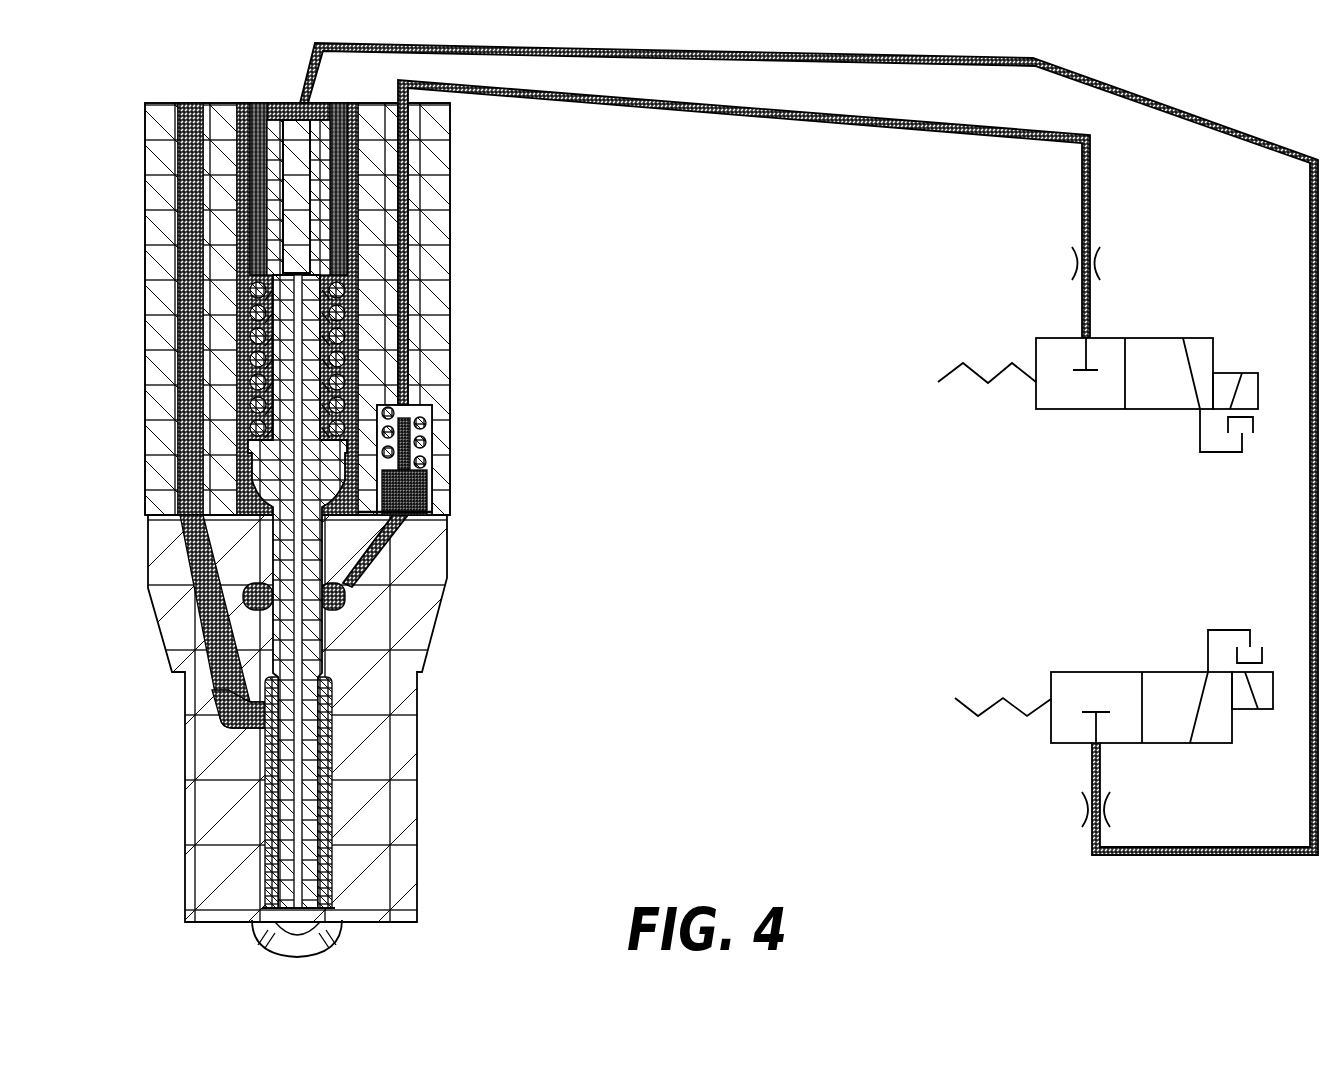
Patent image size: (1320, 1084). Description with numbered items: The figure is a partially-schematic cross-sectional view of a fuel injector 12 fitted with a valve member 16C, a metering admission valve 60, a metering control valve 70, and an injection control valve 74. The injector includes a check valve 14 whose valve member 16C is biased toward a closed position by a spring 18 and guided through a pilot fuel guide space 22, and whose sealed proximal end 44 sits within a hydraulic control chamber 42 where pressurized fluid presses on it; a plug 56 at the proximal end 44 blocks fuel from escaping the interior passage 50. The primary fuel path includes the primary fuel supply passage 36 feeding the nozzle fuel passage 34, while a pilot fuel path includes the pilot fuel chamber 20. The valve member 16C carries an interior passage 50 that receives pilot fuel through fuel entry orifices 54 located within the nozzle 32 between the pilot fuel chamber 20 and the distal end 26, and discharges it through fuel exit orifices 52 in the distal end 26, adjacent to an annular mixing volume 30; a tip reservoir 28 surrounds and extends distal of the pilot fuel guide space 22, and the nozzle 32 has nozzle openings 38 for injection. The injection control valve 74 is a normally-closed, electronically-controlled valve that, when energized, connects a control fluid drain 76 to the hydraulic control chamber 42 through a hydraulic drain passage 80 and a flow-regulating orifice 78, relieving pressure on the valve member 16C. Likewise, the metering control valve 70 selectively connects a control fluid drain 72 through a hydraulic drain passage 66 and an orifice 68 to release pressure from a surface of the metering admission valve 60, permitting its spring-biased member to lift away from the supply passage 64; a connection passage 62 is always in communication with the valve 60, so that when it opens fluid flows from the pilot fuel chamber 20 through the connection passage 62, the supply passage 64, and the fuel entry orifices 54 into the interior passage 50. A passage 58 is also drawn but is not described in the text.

The fuel injector 12 is at (392, 153).
The check valve 14 is at (223, 402).
The valve member 16C is at (333, 220).
The spring 18 is at (352, 310).
The pilot fuel chamber 20 is at (360, 368).
The pilot fuel guide space 22 is at (317, 632).
The distal end 26 is at (317, 917).
The tip reservoir 28 is at (273, 773).
The mixing volume 30 is at (263, 897).
The nozzle 32 is at (193, 815).
The nozzle fuel passage 34 is at (187, 528).
The primary fuel supply passage 36 is at (187, 212).
The nozzle openings 38 is at (330, 932).
The hydraulic control chamber 42 is at (277, 108).
The proximal end 44 is at (288, 117).
The interior passage 50 is at (298, 759).
The fuel exit orifices 52 is at (262, 920).
The fuel entry orifices 54 is at (323, 598).
The plug 56 is at (282, 175).
The fuel passage 58 is at (243, 597).
The metering admission valve 60 is at (423, 480).
The connection passage 62 is at (392, 513).
The supply passage 64 is at (382, 543).
The hydraulic drain passage 66 is at (920, 118).
The orifice 68 is at (1073, 263).
The metering control valve 70 is at (900, 307).
The control fluid drain 72 is at (1250, 435).
The injection control valve 74 is at (993, 637).
The control fluid drain 76 is at (1252, 645).
The orifice 78 is at (1083, 812).
The hydraulic drain passage 80 is at (313, 77).